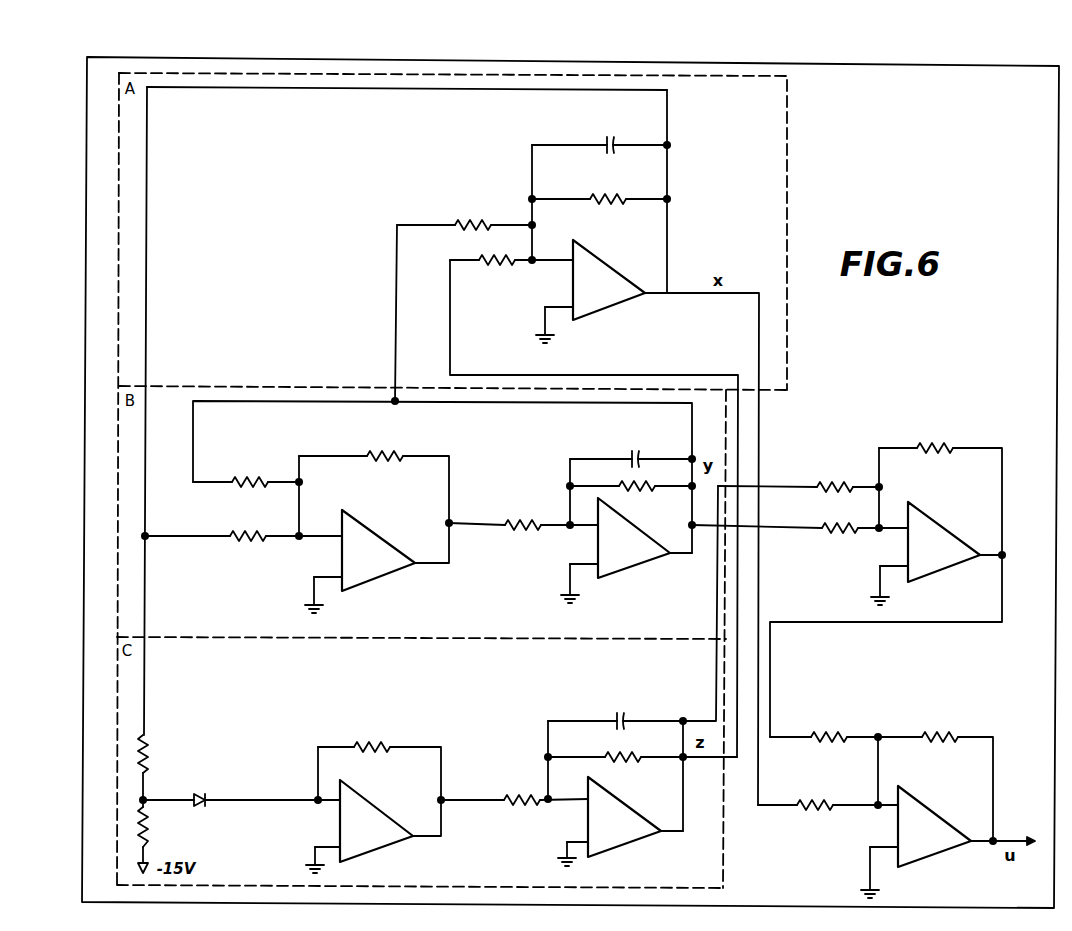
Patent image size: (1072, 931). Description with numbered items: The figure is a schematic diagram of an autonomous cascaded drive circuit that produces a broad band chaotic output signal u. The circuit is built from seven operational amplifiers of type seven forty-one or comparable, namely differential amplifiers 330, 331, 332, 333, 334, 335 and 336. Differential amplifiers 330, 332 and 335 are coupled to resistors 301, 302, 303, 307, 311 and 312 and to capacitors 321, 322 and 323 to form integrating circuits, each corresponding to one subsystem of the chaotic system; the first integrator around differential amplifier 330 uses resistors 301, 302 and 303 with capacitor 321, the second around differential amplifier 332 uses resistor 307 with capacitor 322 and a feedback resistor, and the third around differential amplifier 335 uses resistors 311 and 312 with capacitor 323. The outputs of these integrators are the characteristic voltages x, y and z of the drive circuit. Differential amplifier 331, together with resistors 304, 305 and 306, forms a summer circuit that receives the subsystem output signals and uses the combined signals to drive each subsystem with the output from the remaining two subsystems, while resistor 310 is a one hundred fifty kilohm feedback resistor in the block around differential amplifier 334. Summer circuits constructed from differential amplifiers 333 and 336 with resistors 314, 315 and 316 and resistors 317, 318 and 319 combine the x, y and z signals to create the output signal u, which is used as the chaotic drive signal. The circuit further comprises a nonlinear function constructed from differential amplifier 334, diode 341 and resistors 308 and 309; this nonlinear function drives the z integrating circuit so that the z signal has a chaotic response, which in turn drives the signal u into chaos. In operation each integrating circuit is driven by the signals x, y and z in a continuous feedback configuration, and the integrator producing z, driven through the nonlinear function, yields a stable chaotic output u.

The resistor 301 is at (473, 220).
The resistor 302 is at (497, 265).
The resistor 303 is at (608, 205).
The resistor 304 is at (244, 472).
The resistor 305 is at (236, 542).
The resistor 306 is at (386, 449).
The resistor 307 is at (517, 516).
The resistor 308 is at (150, 757).
The resistor 309 is at (152, 829).
The resistor 310 is at (380, 740).
The resistor 311 is at (507, 802).
The resistor 312 is at (636, 762).
The resistor 314 is at (838, 480).
The resistor 315 is at (835, 538).
The resistor 316 is at (939, 442).
The resistor 317 is at (828, 730).
The resistor 318 is at (814, 812).
The resistor 319 is at (950, 730).
The capacitor 321 is at (607, 140).
The capacitor 322 is at (630, 452).
The capacitor 323 is at (625, 701).
The differential amplifier 330 is at (602, 310).
The differential amplifier 331 is at (372, 580).
The differential amplifier 332 is at (628, 570).
The differential amplifier 333 is at (943, 569).
The differential amplifier 334 is at (391, 846).
The differential amplifier 335 is at (632, 842).
The differential amplifier 336 is at (953, 850).
The diode 341 is at (210, 806).